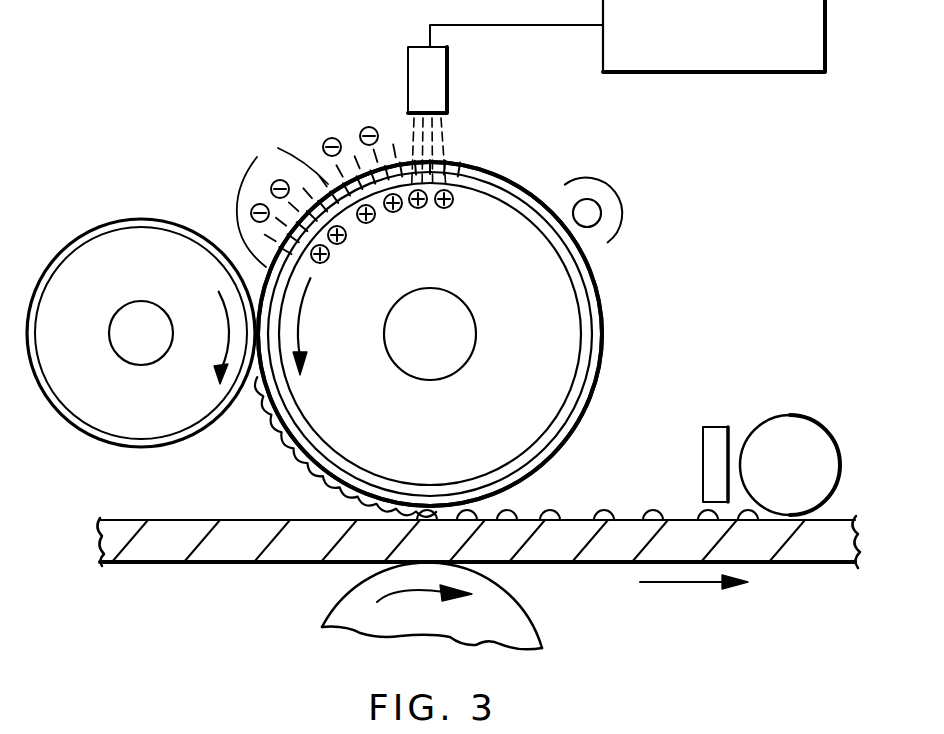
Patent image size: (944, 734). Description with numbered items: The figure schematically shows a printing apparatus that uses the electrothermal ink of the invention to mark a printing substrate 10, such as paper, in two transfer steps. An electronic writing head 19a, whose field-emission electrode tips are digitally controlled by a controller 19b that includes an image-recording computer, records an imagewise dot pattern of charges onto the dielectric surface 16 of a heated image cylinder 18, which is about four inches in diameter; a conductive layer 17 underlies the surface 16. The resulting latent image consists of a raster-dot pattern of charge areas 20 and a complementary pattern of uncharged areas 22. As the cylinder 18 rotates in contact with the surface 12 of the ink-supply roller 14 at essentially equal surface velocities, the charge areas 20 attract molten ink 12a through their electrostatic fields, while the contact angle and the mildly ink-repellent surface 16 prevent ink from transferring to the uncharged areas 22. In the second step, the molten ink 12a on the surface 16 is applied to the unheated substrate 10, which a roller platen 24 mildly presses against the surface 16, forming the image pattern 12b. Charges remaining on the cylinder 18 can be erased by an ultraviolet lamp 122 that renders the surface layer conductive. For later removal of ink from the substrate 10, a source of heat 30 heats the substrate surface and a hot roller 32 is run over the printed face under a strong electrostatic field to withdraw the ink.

The printing substrate 10 is at (164, 530).
The surface of ink-supply roller 12 is at (121, 220).
The molten ink 12a is at (308, 465).
The image pattern 12b is at (648, 520).
The ink-supply roller 14 is at (78, 408).
The dielectric surface 16 is at (604, 329).
The conductive layer 17 is at (585, 397).
The image cylinder 18 is at (618, 297).
The electronic writing head 19a is at (452, 63).
The controller 19b is at (725, 74).
The charge areas 20 is at (388, 120).
The uncharged areas 22 is at (282, 197).
The roller platen 24 is at (530, 612).
The source of heat 30 is at (716, 426).
The hot roller 32 is at (787, 424).
The ultraviolet lamp 122 is at (618, 194).